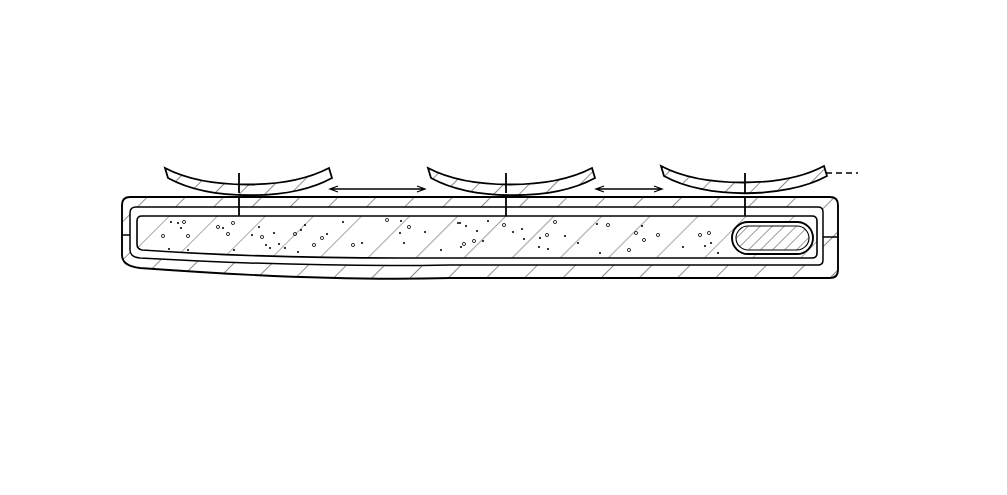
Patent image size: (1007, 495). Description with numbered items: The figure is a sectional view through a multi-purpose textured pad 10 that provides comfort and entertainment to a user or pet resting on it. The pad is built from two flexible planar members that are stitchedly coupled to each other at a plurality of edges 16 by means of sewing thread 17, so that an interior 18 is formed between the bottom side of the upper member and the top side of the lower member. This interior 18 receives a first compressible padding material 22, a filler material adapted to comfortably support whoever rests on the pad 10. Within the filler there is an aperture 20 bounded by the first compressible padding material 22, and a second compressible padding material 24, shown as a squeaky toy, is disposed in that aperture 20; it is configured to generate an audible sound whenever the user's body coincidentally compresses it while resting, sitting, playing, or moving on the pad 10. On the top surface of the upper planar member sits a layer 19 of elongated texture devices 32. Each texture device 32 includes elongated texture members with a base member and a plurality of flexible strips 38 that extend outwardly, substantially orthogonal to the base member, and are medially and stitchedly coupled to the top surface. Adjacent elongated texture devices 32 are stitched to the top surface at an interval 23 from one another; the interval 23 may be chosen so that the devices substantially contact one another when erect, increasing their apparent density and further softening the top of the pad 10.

The multi-purpose textured pad 10 is at (163, 107).
The edges 16 is at (115, 232).
The sewing thread 17 is at (232, 178).
The interior 18 is at (122, 212).
The layer 19 is at (837, 167).
The aperture 20 is at (723, 262).
The first compressible padding material 22 is at (322, 252).
The interval 23 is at (372, 188).
The second compressible padding material 24 is at (800, 248).
The elongated texture devices 32 is at (553, 148).
The flexible strips 38 is at (774, 168).